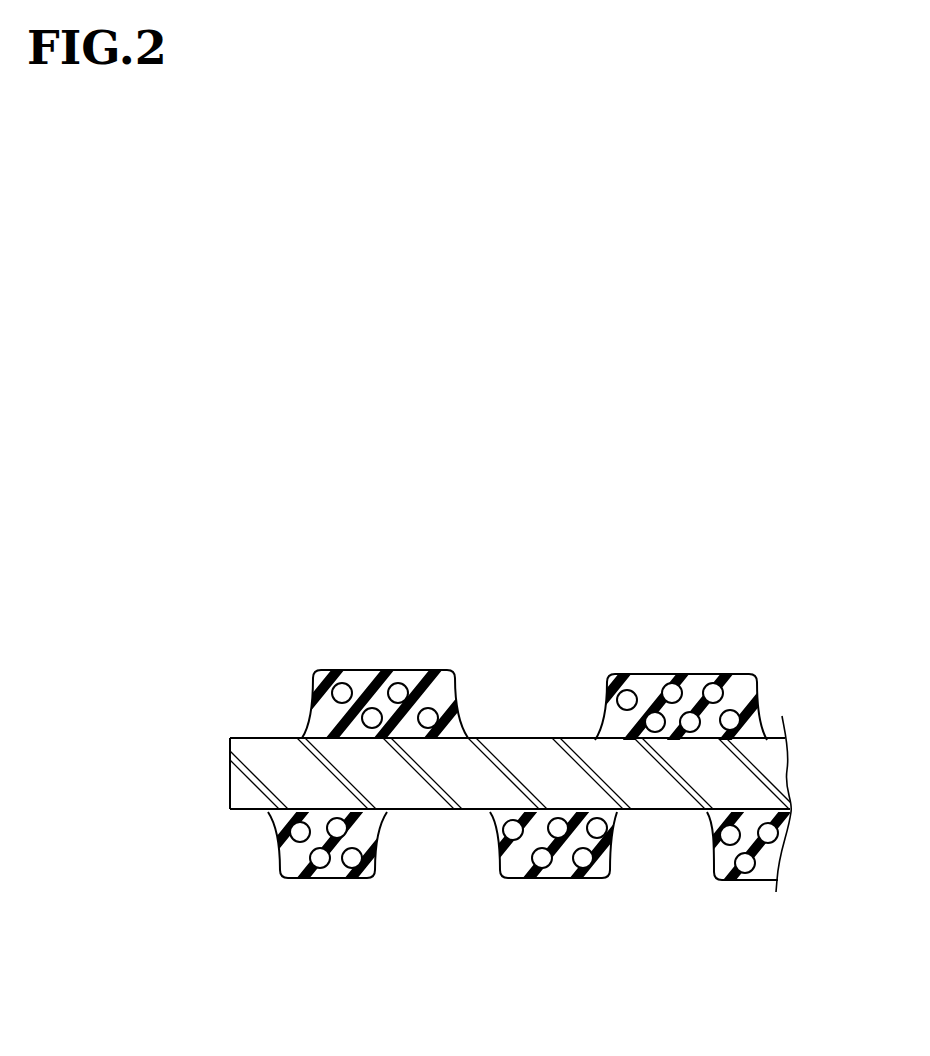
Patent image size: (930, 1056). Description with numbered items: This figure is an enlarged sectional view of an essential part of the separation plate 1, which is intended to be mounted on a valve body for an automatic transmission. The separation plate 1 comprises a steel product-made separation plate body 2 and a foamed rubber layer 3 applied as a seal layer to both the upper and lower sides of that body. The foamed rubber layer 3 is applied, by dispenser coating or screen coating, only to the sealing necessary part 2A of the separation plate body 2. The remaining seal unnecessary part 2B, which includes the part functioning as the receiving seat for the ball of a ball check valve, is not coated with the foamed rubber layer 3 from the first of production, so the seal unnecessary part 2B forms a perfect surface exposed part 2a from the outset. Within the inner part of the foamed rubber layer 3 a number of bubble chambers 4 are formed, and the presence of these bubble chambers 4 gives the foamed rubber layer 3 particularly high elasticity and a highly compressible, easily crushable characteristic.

The separation plate 1 is at (270, 655).
The separation plate body 2 is at (778, 780).
The sealing necessary part 2A is at (333, 670).
The seal unnecessary part 2B is at (243, 737).
The surface exposed part 2a is at (270, 737).
The foamed rubber layer 3 is at (370, 677).
The bubble chambers 4 is at (398, 690).